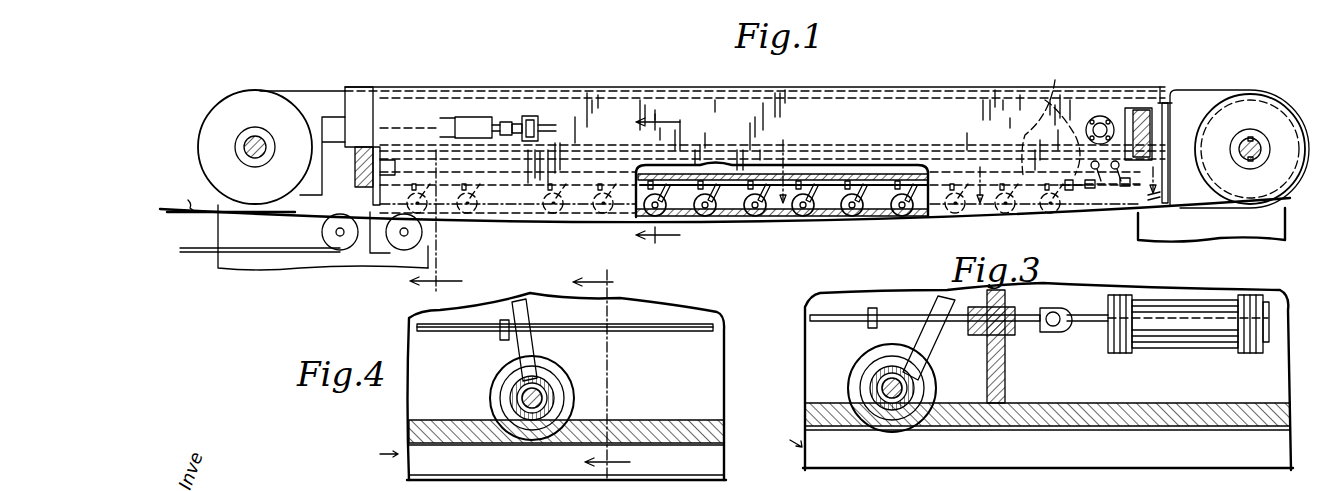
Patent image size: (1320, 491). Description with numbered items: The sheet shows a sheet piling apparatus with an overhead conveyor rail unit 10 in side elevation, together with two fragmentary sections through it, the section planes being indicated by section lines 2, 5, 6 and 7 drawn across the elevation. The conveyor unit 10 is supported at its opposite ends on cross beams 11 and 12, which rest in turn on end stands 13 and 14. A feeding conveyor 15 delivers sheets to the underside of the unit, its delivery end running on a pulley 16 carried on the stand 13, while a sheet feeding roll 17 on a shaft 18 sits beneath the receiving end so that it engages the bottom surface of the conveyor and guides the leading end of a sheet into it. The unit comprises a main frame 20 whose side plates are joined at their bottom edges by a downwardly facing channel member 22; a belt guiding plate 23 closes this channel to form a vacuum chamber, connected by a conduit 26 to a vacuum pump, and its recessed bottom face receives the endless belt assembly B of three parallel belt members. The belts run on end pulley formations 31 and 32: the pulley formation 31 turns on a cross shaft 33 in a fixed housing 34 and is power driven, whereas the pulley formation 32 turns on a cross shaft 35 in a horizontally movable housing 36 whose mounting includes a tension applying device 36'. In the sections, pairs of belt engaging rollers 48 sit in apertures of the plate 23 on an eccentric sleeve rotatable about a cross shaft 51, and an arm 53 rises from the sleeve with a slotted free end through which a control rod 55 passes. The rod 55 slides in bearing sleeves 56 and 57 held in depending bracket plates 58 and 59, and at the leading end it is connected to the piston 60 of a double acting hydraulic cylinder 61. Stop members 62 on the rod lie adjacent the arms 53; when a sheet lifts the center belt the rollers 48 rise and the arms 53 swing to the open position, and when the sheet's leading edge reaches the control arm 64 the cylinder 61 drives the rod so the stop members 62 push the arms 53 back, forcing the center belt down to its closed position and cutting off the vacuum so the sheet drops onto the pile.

In FIG. 1, the conveyor rail unit 10 is at (889, 82).
In FIG. 1, the cross beam 11 is at (355, 164).
In FIG. 1, the cross beam 12 is at (1152, 140).
In FIG. 1, the end stand 13 is at (250, 268).
In FIG. 1, the end stand 14 is at (1256, 226).
In FIG. 1, the feeding conveyor 15 is at (200, 250).
In FIG. 1, the pulley 16 is at (341, 240).
In FIG. 1, the sheet feeding roll 17 is at (414, 231).
In FIG. 1, the shaft 18 is at (400, 238).
In FIG. 1, the main frame 20 is at (958, 108).
In FIG. 1, the channel member 22 is at (466, 168).
In FIG. 4, the channel member 22 is at (770, 490).
In FIG. 3, the channel member 22 is at (1085, 290).
In FIG. 1, the belt guiding plate 23 is at (832, 216).
In FIG. 4, the belt guiding plate 23 is at (668, 423).
In FIG. 3, the belt guiding plate 23 is at (1092, 410).
In FIG. 1, the conduit 26 is at (1051, 115).
In FIG. 1, the pulley formation 31 is at (1242, 104).
In FIG. 1, the pulley formation 32 is at (250, 104).
In FIG. 1, the cross shaft 33 is at (1254, 145).
In FIG. 1, the fixed housing 34 is at (1191, 103).
In FIG. 1, the cross shaft 35 is at (250, 143).
In FIG. 1, the movable housing 36 is at (302, 125).
In FIG. 1, the tension applying device 36' is at (498, 100).
In FIG. 1, the belt engaging roller 48 is at (712, 220).
In FIG. 4, the belt engaging roller 48 is at (572, 390).
In FIG. 3, the belt engaging roller 48 is at (865, 368).
In FIG. 4, the cross shaft 51 is at (522, 398).
In FIG. 3, the cross shaft 51 is at (878, 388).
In FIG. 1, the arm 53 is at (780, 214).
In FIG. 4, the arm 53 is at (530, 349).
In FIG. 3, the arm 53 is at (925, 356).
In FIG. 1, the control rod 55 is at (697, 190).
In FIG. 4, the control rod 55 is at (662, 324).
In FIG. 3, the control rod 55 is at (810, 315).
In FIG. 1, the bearing sleeve 56 is at (1088, 195).
In FIG. 3, the bearing sleeve 56 is at (1013, 312).
In FIG. 1, the bearing sleeve 57 is at (387, 170).
In FIG. 1, the bracket plate 58 is at (1022, 210).
In FIG. 3, the bracket plate 58 is at (1006, 367).
In FIG. 1, the bracket plate 59 is at (369, 107).
In FIG. 1, the piston 60 is at (1078, 170).
In FIG. 3, the piston 60 is at (1086, 325).
In FIG. 1, the hydraulic cylinder 61 is at (1140, 205).
In FIG. 3, the hydraulic cylinder 61 is at (1194, 340).
In FIG. 1, the stop member 62 is at (856, 173).
In FIG. 4, the stop member 62 is at (498, 341).
In FIG. 3, the stop member 62 is at (872, 308).
In FIG. 1, the control arm 64 is at (877, 218).
In FIG. 1, the section line 2 is at (981, 162).
In FIG. 1, the section line 5 is at (432, 180).
In FIG. 4, the section line 6 is at (608, 375).
In FIG. 1, the section line 7 is at (441, 208).
In FIG. 1, the belt assembly B is at (760, 244).
In FIG. 4, the belt assembly B is at (380, 454).
In FIG. 3, the belt assembly B is at (784, 439).